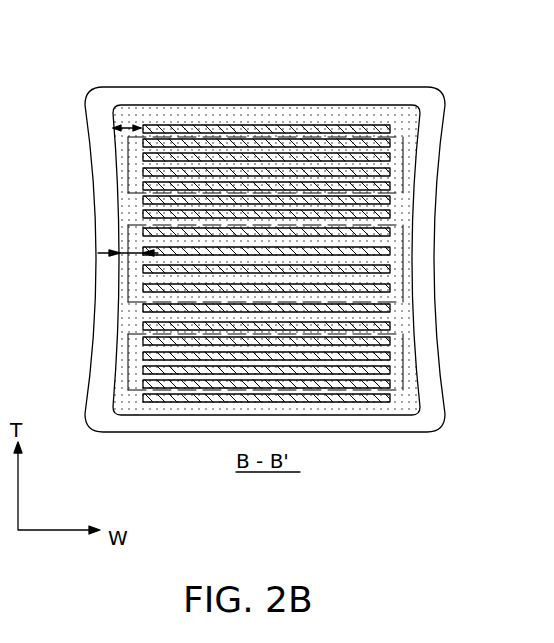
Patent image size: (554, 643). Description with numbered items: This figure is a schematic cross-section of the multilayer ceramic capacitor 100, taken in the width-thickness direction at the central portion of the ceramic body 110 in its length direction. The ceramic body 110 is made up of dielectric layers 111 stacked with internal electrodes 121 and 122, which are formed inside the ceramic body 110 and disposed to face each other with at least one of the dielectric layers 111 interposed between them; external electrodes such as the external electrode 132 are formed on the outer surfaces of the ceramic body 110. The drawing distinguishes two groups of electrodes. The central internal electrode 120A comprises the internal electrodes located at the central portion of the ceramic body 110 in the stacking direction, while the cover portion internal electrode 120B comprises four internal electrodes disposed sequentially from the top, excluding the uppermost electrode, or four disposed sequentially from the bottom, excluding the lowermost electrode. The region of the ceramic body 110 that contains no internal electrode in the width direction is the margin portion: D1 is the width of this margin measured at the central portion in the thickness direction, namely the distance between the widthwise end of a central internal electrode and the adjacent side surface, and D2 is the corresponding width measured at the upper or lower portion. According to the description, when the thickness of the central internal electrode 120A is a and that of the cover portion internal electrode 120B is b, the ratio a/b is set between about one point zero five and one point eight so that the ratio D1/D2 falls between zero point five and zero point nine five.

The multilayer ceramic capacitor 100 is at (71, 37).
The ceramic body 110 is at (258, 100).
The dielectric layers 111 is at (147, 205).
The internal electrode 121 is at (388, 127).
The internal electrode 122 is at (277, 263).
The external electrode 132 is at (330, 97).
The central internal electrode 120A is at (403, 262).
The cover portion internal electrode 120B is at (403, 165).
The width of the central margin portion D1 is at (108, 253).
The width of the upper or lower margin portion D2 is at (120, 126).